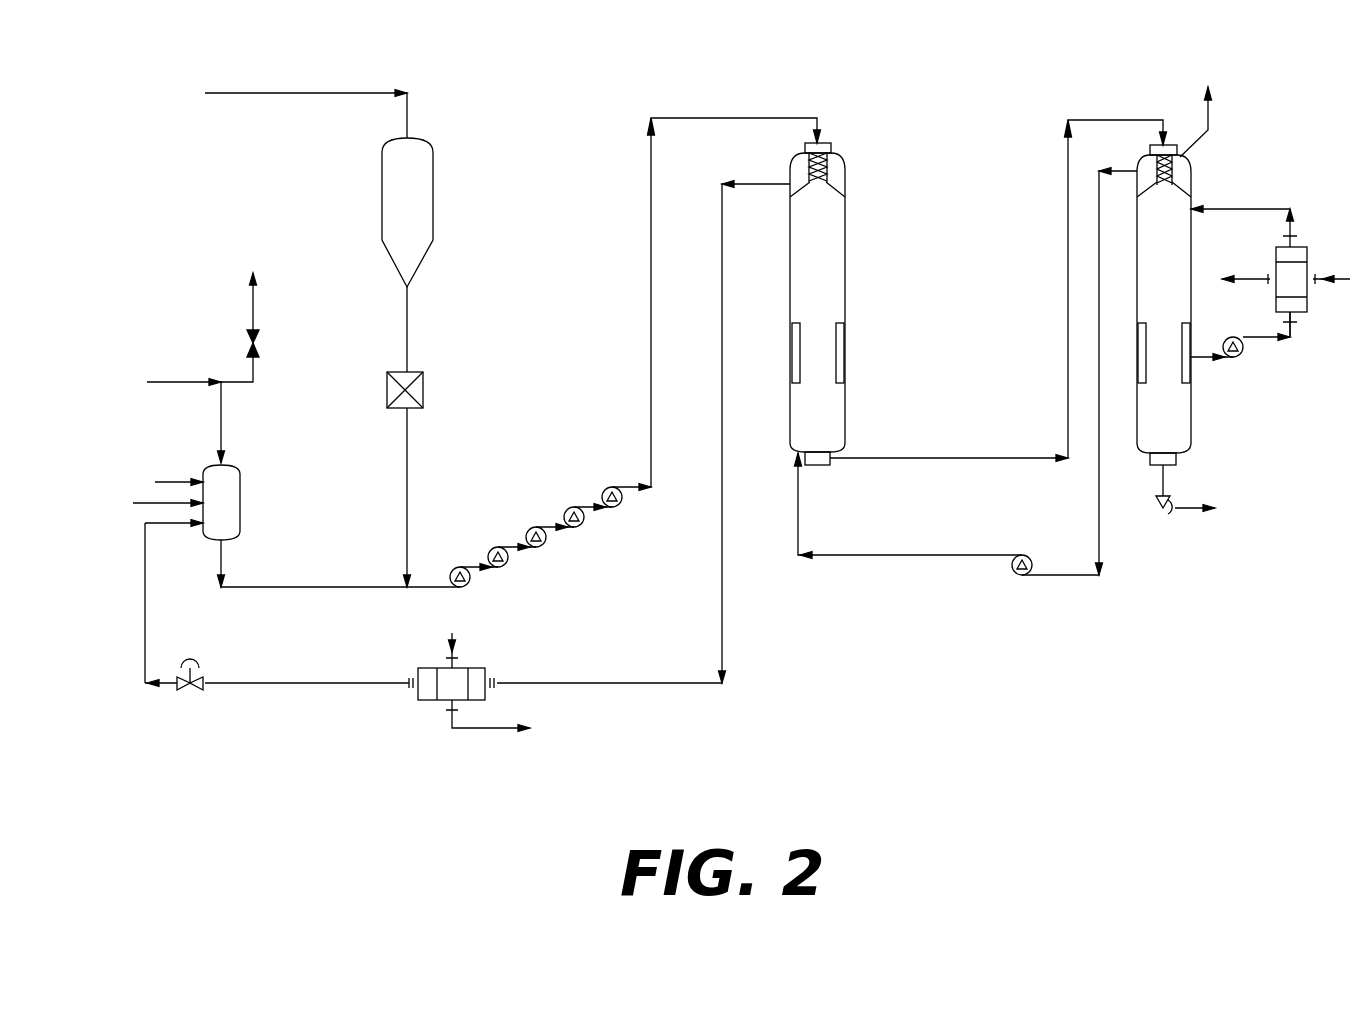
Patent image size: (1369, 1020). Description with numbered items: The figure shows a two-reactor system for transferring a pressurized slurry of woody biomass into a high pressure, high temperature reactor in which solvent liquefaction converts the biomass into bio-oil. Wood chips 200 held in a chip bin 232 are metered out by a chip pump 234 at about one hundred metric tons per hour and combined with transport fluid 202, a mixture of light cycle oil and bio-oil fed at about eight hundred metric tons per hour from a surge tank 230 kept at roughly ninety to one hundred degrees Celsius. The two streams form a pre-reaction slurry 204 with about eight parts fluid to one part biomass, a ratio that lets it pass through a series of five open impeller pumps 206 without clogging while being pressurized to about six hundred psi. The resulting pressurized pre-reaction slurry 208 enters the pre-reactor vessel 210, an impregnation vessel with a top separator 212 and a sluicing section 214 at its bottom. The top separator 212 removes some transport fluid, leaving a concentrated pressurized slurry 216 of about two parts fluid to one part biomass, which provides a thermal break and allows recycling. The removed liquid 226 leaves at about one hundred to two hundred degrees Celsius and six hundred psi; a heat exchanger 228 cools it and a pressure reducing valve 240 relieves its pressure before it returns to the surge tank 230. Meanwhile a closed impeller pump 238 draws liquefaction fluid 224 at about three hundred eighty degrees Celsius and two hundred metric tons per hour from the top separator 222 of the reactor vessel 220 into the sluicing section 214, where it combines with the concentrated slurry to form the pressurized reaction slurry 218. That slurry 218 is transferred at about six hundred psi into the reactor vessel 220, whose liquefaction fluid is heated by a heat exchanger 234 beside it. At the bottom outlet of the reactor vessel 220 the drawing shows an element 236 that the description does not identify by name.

The wood chips 200 is at (388, 437).
The transport fluid 202 is at (313, 575).
The pre-reaction slurry 204 is at (433, 598).
The open impeller pumps 206 is at (536, 537).
The pressurized pre-reaction slurry 208 is at (716, 304).
The pre-reactor vessel 210 is at (830, 412).
The top separator 212 is at (829, 162).
The sluicing section 214 is at (819, 449).
The pressurized slurry 216 is at (817, 195).
The pressurized reaction slurry 218 is at (998, 291).
The reactor vessel 220 is at (1175, 412).
The top separator 222 is at (1145, 160).
The liquefaction fluid 224 is at (1079, 362).
The liquid 226 is at (643, 423).
The heat exchanger 228 is at (367, 682).
The surge tank 230 is at (137, 574).
The chip bin 232 is at (286, 186).
The chip pump 234 is at (868, 307).
The outlet valve 236 is at (1236, 503).
The closed impeller pump 238 is at (916, 529).
The pressure reducing valve 240 is at (700, 399).